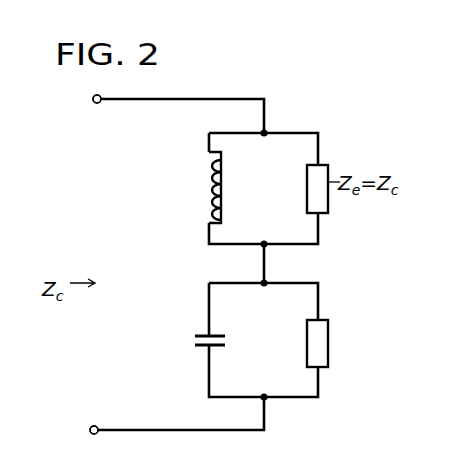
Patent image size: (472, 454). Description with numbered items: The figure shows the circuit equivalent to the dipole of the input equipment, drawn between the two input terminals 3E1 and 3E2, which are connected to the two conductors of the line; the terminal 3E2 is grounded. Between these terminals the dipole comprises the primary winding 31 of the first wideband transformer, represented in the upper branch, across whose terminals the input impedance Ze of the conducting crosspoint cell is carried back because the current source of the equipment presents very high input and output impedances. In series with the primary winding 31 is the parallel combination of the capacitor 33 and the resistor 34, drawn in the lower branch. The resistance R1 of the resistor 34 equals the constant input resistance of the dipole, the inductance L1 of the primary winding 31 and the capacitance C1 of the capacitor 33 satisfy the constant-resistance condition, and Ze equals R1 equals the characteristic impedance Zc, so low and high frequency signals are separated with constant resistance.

The primary winding 31 is at (208, 190).
The capacitor 33 is at (196, 338).
The resistor 34 is at (328, 340).
The input terminal 3E1 is at (93, 99).
The input terminal 3E2 is at (93, 429).